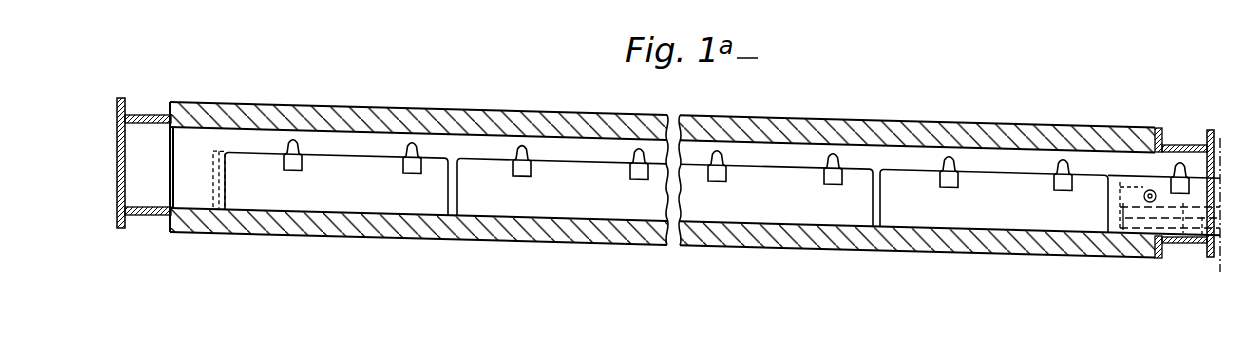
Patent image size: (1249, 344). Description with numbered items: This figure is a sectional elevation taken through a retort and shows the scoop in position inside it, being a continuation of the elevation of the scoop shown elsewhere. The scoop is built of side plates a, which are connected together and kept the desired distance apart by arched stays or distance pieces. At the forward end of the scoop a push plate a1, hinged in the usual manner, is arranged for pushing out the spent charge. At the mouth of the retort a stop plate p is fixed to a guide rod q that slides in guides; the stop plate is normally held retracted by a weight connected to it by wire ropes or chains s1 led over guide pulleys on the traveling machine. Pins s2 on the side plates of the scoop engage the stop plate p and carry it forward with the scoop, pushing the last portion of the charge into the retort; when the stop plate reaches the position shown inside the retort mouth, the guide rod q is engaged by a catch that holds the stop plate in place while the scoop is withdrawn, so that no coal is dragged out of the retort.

The side plates a is at (722, 187).
The push plate a1 is at (219, 167).
The pins s2 is at (1150, 189).
The stop plate p is at (1120, 182).
The guide rod q is at (1182, 229).
The wire ropes or chains s1 is at (1202, 237).